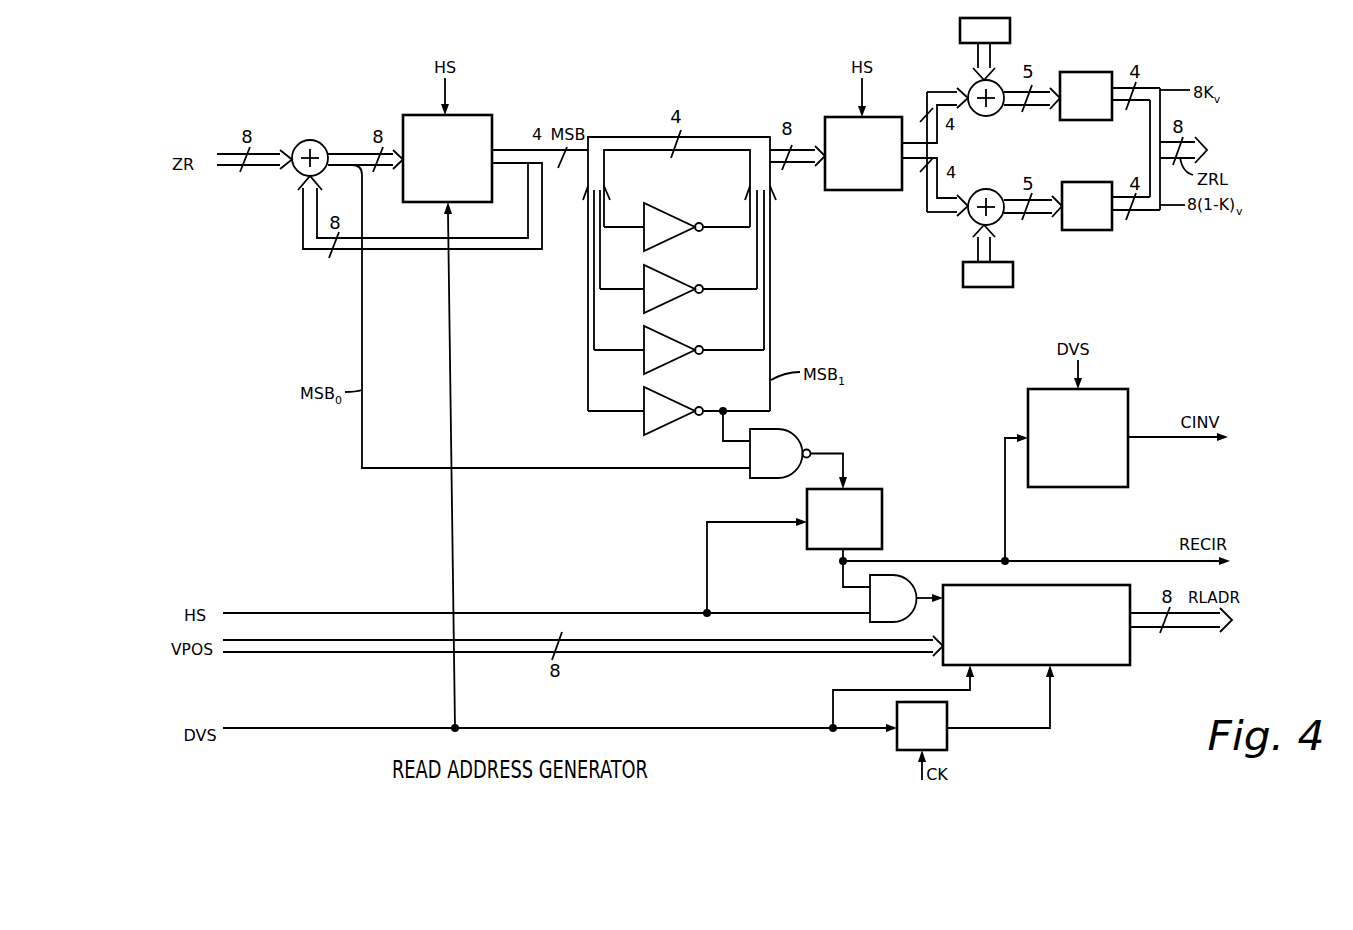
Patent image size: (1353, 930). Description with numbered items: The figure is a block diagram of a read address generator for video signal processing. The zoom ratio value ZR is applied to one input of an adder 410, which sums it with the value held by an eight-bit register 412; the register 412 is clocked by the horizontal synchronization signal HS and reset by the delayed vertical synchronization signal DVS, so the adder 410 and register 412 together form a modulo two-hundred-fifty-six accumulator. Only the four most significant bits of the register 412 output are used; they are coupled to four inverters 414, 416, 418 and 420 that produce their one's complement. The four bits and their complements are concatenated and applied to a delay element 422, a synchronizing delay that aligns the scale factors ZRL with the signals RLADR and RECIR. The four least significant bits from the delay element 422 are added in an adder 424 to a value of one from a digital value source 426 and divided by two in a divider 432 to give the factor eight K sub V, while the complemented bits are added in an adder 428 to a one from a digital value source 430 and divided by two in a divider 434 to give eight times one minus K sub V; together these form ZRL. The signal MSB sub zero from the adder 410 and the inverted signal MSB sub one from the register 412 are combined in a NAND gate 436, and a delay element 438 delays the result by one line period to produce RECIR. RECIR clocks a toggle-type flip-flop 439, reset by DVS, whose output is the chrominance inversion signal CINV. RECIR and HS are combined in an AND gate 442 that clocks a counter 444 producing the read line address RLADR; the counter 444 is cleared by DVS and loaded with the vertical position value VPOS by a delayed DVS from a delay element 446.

The adder 410 is at (309, 140).
The eight-bit register 412 is at (478, 113).
The inverter 414 is at (670, 213).
The inverter 416 is at (670, 274).
The inverter 418 is at (672, 337).
The inverter 420 is at (672, 399).
The delay element 422 is at (855, 192).
The adder 424 is at (982, 117).
The digital value source 426 is at (1010, 38).
The adder 428 is at (986, 189).
The digital value source 430 is at (1013, 277).
The divider 432 is at (1112, 77).
The divider 434 is at (1088, 182).
The NAND gate 436 is at (790, 432).
The delay element 438 is at (884, 514).
The toggle-type flip-flop 439 is at (1130, 408).
The AND gate 442 is at (860, 601).
The counter 444 is at (1110, 668).
The delay element 446 is at (950, 745).